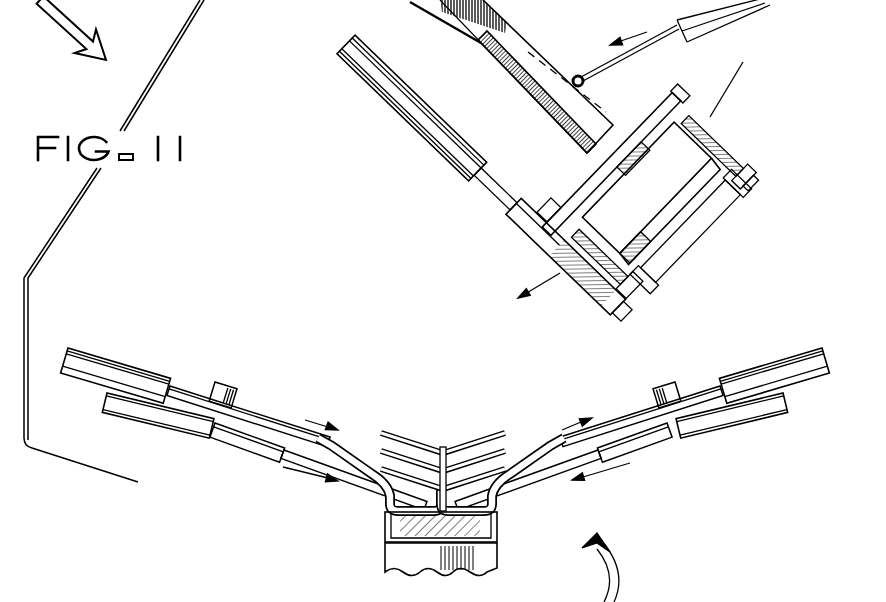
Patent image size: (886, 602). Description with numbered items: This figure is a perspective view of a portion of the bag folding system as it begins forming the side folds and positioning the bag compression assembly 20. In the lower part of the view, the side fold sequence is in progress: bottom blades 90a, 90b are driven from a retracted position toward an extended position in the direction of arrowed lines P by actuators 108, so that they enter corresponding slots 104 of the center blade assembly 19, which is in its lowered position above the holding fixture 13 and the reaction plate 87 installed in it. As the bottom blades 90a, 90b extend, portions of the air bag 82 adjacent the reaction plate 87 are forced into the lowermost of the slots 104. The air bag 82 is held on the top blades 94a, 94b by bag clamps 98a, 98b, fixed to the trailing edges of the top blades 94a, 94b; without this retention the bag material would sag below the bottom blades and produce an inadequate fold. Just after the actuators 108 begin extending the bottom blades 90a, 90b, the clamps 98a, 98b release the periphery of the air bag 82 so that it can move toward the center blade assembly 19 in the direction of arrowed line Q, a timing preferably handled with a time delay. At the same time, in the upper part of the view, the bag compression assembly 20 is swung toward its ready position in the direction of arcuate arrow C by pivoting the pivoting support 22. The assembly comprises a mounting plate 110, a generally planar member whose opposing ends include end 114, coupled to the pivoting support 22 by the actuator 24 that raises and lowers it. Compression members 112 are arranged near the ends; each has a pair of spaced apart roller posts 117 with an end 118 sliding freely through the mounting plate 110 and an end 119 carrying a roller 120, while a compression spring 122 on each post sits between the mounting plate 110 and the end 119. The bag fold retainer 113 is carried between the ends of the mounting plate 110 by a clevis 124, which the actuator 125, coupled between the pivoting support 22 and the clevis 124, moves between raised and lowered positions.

The holding fixture 13 is at (496, 555).
The center blade assembly 19 is at (466, 418).
The bag compression assembly 20 is at (738, 119).
The pivoting support 22 is at (505, 33).
The second actuator 24 is at (530, 91).
The air bag 82 is at (357, 450).
The reaction plate 87 is at (498, 524).
The bottom blade 90a is at (362, 478).
The bottom blade 90b is at (536, 478).
The top blade 94a is at (262, 420).
The top blade 94b is at (618, 423).
The bag clamp 98a is at (232, 381).
The bag clamp 98b is at (667, 385).
The slots 104 is at (408, 450).
The actuators 108 is at (173, 425).
The mounting plate 110 is at (600, 185).
The compression members 112 is at (765, 160).
The bag fold retainer 113 is at (645, 319).
The end 114 is at (655, 130).
The roller posts 117 is at (735, 150).
The end 118 is at (557, 211).
The end 119 is at (760, 183).
The roller 120 is at (738, 224).
The compression spring 122 is at (697, 143).
The clevis 124 is at (641, 243).
The actuator 125 is at (417, 128).
The arcuate arrow C is at (550, 266).
The arrowed lines P is at (298, 472).
The arrowed line Q is at (315, 418).